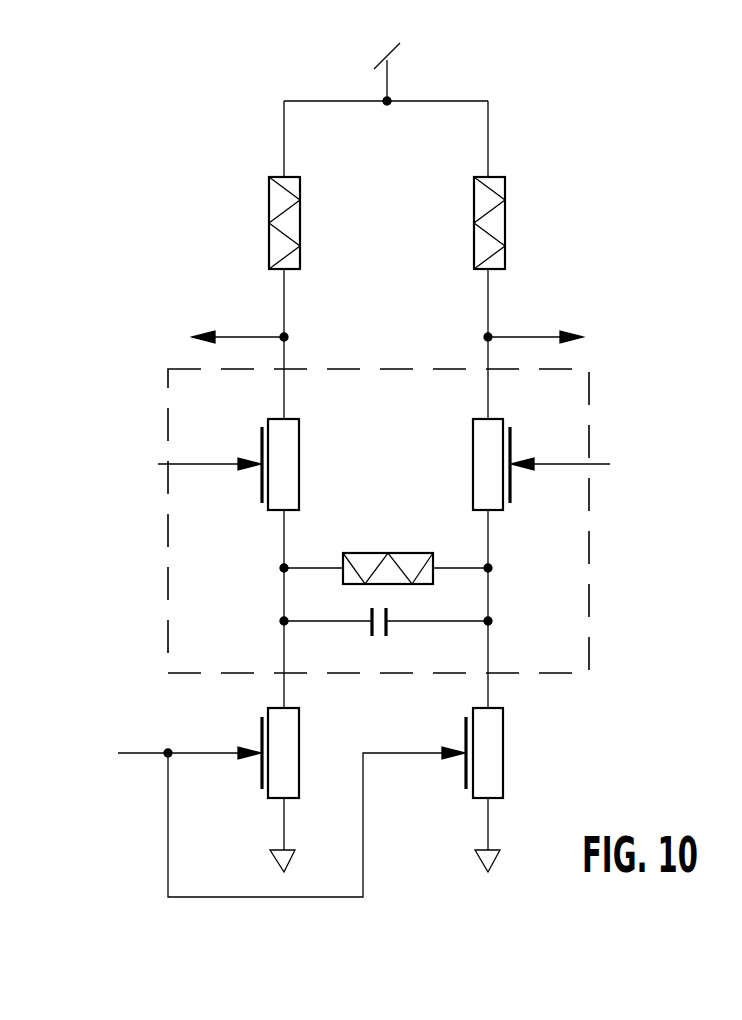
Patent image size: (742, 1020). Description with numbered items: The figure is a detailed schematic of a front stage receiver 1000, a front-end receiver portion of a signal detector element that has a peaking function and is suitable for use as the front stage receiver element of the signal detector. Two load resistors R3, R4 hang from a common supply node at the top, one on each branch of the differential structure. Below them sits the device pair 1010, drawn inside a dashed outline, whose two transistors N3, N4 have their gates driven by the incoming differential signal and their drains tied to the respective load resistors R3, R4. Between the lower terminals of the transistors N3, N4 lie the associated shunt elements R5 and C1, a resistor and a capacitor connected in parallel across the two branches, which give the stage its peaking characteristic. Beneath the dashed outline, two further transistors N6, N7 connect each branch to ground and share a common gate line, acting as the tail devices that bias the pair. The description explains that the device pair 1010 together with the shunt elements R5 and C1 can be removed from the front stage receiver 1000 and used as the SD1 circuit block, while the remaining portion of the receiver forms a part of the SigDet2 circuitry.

The front stage receiver 1000 is at (586, 66).
The device pair 1010 is at (403, 368).
The load resistor R3 is at (261, 225).
The load resistor R4 is at (509, 225).
The shunt element R5 is at (386, 552).
The shunt element C1 is at (386, 656).
The NMOS transistor N3 is at (228, 464).
The NMOS transistor N4 is at (541, 464).
The NMOS current source transistor N6 is at (208, 790).
The NMOS current source transistor N7 is at (356, 802).